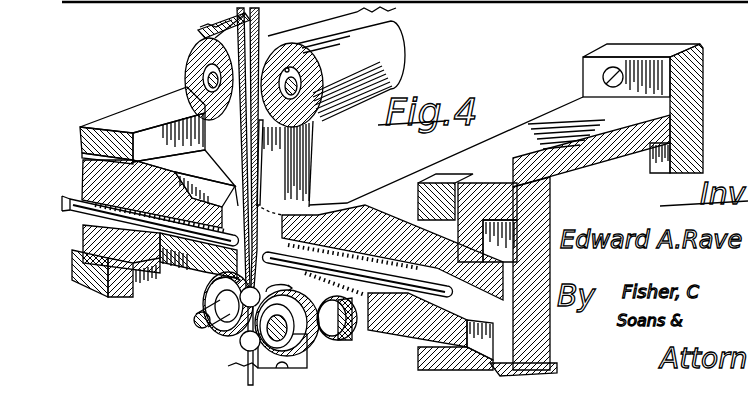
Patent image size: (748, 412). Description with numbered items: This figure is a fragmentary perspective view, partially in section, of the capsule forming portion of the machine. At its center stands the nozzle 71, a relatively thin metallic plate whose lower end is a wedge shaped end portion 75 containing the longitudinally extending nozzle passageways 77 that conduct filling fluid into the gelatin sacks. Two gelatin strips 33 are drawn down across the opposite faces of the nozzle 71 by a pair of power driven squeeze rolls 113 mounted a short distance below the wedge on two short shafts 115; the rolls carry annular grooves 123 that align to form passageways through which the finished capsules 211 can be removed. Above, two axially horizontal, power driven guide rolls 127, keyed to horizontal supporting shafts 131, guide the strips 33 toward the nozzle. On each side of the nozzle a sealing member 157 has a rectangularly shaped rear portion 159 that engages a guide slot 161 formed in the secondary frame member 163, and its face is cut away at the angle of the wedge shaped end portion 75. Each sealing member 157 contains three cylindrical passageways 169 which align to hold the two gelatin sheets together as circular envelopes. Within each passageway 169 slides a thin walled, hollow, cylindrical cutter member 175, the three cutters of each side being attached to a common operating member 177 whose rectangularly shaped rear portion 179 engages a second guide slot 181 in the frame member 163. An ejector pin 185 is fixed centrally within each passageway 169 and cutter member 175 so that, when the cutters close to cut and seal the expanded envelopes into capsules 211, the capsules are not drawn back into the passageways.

The nozzle 71 is at (236, 16).
The nozzle passageways 77 is at (252, 146).
The wedge shaped end portion 75 is at (263, 170).
The gelatin strips 33 is at (203, 27).
The guide rolls 127 is at (190, 55).
The supporting shafts 131 is at (196, 75).
The secondary frame member 163 is at (124, 110).
The sealing members 157 is at (180, 150).
The rear portion of sealing member 159 is at (95, 186).
The guide slot 161 is at (88, 160).
The ejector pin 185 is at (84, 208).
The cylindrical passageways 169 is at (284, 270).
The guide slot 181 is at (85, 244).
The rear portion of operating member 179 is at (110, 294).
The operating member 177 is at (145, 296).
The cutter members 175 is at (203, 273).
The squeeze rolls 113 is at (205, 297).
The shafts 115 is at (195, 325).
The annular grooves 123 is at (226, 335).
The capsules 211 is at (240, 347).